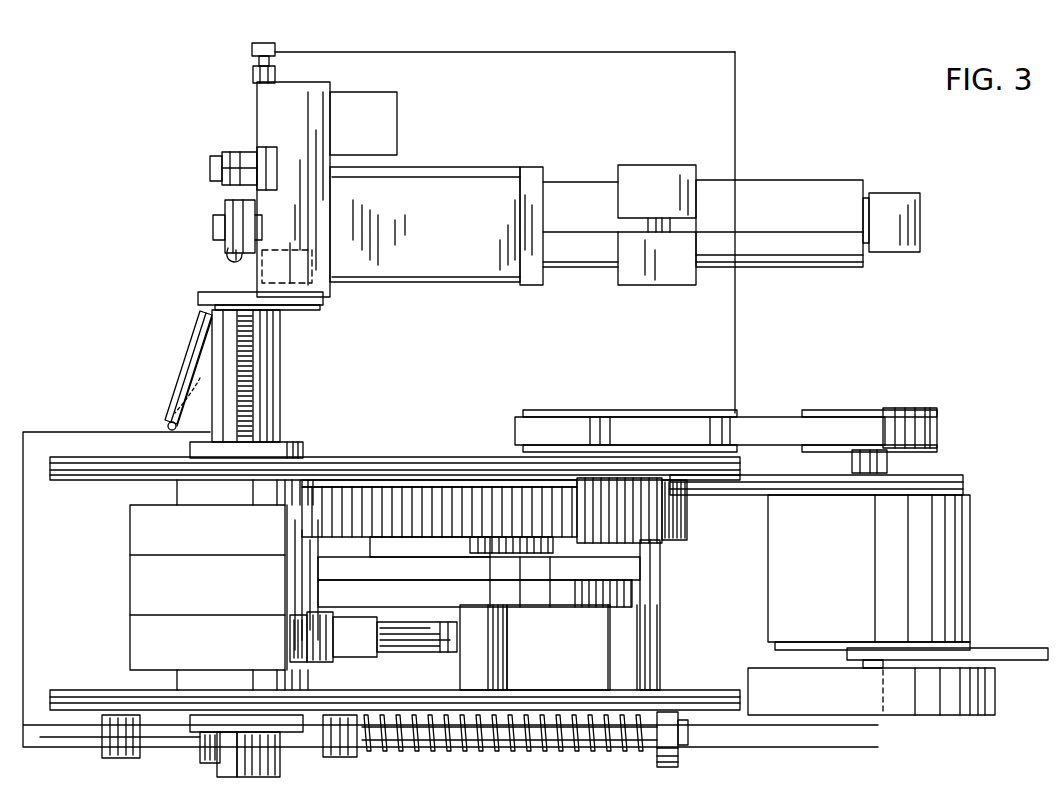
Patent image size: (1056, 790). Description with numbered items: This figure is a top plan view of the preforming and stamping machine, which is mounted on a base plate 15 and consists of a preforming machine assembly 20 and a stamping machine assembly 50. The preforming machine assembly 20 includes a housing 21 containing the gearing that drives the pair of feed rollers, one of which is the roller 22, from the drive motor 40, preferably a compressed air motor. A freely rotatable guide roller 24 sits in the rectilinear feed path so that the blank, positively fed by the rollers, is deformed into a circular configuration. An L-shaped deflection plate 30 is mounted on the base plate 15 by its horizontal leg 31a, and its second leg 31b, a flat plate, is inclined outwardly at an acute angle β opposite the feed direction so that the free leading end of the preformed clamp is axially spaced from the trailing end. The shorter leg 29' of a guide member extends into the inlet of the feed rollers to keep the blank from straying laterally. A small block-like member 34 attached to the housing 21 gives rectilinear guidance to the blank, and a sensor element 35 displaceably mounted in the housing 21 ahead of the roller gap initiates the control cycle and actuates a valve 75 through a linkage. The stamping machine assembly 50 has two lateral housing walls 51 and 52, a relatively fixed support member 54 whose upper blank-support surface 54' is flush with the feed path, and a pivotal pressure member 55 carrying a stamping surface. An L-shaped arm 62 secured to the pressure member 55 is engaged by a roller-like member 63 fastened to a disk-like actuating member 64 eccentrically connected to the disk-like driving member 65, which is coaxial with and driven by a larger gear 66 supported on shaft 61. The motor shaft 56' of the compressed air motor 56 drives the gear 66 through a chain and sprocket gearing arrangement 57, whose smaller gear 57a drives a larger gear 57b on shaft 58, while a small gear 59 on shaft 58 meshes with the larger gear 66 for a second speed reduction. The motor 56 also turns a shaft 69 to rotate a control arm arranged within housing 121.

The base plate 15 is at (668, 65).
The preforming machine assembly 20 is at (340, 63).
The housing 21 is at (300, 180).
The roller 22 is at (223, 212).
The guide roller 24 is at (237, 154).
The shorter leg 29' is at (198, 245).
The L-shaped deflection plate 30 is at (178, 340).
The horizontal leg 31a is at (173, 426).
The second leg 31b is at (178, 354).
The block-like member 34 is at (313, 308).
The sensor element 35 is at (250, 268).
The drive motor 40 is at (772, 188).
The stamping machine assembly 50 is at (409, 444).
The lateral housing wall 51 is at (342, 464).
The lateral housing wall 52 is at (98, 692).
The support member 54 is at (395, 748).
The upper blank-support surface 54' is at (248, 547).
The pressure member 55 is at (130, 584).
The compressed air motor 56 is at (886, 572).
The motor shaft 56' is at (824, 471).
The chain and sprocket gearing arrangement 57 is at (772, 420).
The smaller gear 57a is at (918, 408).
The larger gear 57b is at (540, 410).
The shaft 58 is at (640, 673).
The small gear 59 is at (688, 519).
The shaft 61 is at (505, 658).
The L-shaped arm 62 is at (408, 635).
The roller-like member 63 is at (290, 642).
The disk-like actuating member 64 is at (586, 595).
The disk-like driving member 65 is at (660, 560).
The larger gear 66 is at (437, 498).
The shaft 69 is at (854, 664).
The valve 75 is at (405, 98).
The housing 121 is at (995, 691).